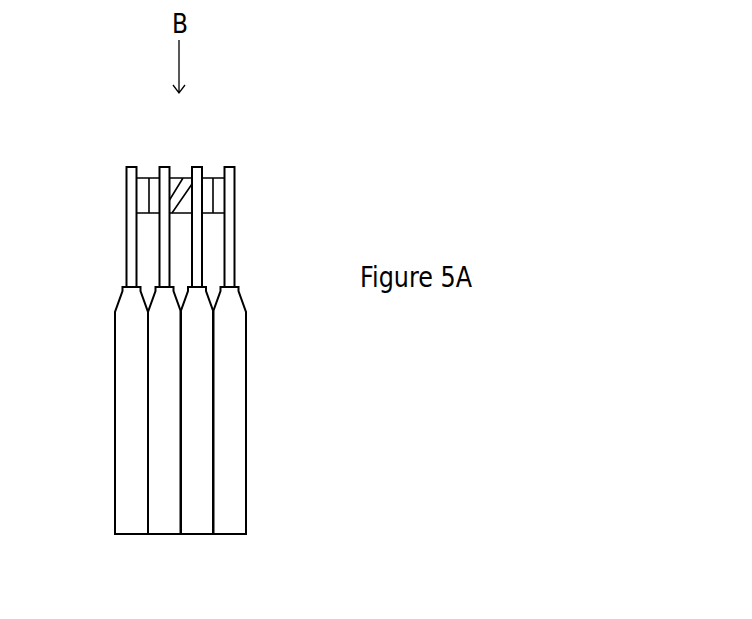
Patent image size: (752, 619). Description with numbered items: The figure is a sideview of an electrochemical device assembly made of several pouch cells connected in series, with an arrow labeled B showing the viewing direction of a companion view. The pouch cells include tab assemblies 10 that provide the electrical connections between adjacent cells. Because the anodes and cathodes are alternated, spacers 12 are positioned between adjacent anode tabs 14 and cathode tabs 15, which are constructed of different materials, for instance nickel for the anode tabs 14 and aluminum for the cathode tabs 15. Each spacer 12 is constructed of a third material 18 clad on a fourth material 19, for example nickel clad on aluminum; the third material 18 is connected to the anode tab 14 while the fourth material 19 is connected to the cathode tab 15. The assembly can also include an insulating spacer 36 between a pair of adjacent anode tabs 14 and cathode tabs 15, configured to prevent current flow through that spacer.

The tab assembly 10 is at (98, 208).
The spacer 12 is at (159, 160).
The anode tab 14 is at (162, 167).
The cathode tab 15 is at (198, 167).
The third material 18 is at (218, 192).
The fourth material 19 is at (205, 207).
The insulating spacer 36 is at (192, 160).